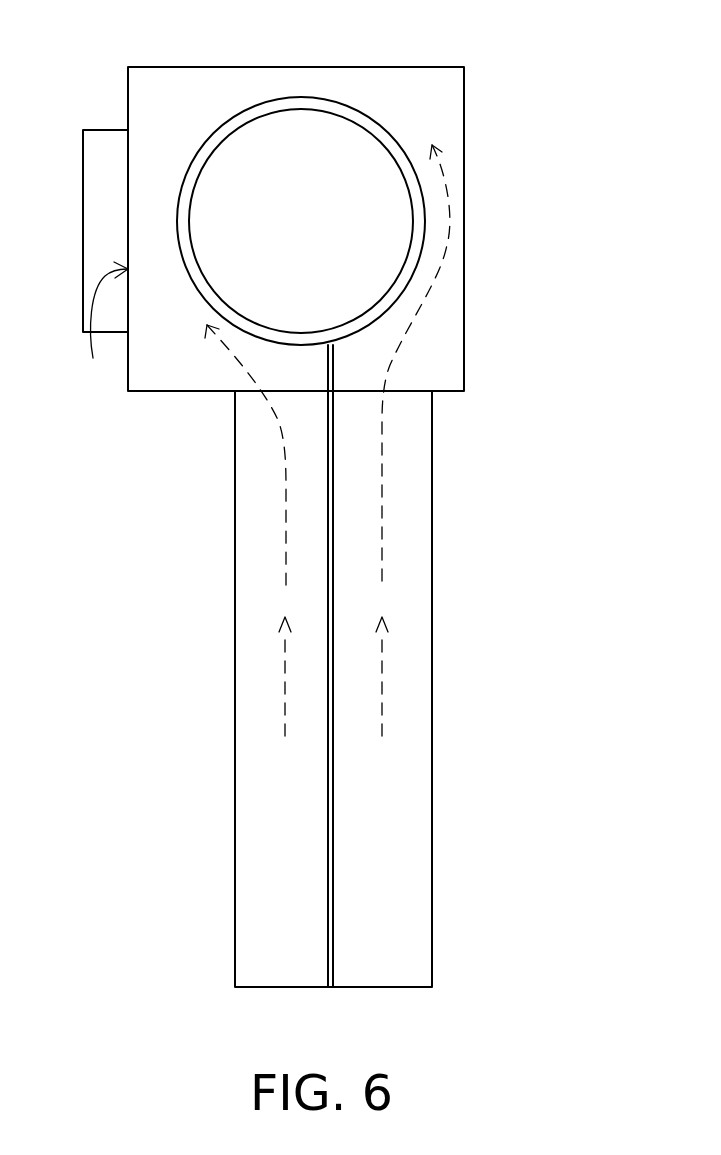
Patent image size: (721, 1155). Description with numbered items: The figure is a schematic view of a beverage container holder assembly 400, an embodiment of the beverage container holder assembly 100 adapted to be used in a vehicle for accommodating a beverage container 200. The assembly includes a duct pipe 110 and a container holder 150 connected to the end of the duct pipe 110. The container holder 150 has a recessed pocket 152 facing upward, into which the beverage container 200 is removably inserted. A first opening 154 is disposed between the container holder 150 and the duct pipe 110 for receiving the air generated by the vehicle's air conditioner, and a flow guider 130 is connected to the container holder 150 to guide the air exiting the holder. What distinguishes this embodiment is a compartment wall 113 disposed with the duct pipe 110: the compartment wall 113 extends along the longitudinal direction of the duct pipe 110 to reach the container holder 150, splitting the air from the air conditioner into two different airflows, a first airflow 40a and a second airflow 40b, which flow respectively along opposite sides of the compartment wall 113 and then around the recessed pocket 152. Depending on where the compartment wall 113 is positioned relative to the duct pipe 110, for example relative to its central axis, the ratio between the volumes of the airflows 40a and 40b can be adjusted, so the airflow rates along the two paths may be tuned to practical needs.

The beverage container holder assembly 100 is at (589, 317).
The duct pipe 110 is at (422, 800).
The compartment wall 113 is at (333, 541).
The flow guider 130 is at (98, 233).
The container holder 150 is at (455, 147).
The recessed pocket 152 is at (370, 132).
The first opening 154 is at (101, 330).
The beverage container 200 is at (276, 145).
The first airflow 40a is at (283, 690).
The second airflow 40b is at (384, 690).
The beverage container holder assembly 400 is at (504, 1038).